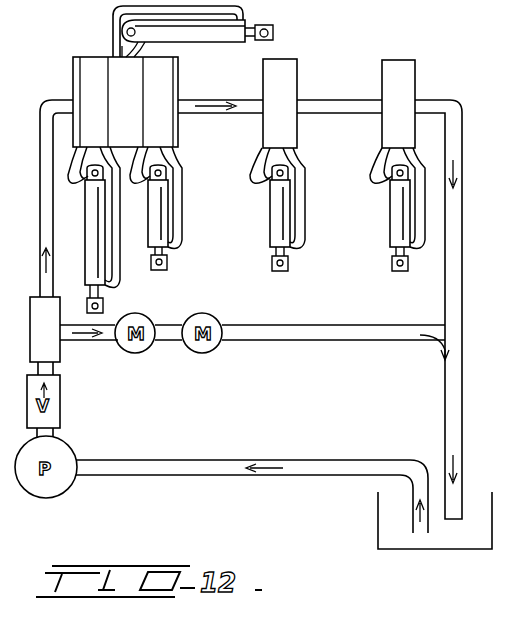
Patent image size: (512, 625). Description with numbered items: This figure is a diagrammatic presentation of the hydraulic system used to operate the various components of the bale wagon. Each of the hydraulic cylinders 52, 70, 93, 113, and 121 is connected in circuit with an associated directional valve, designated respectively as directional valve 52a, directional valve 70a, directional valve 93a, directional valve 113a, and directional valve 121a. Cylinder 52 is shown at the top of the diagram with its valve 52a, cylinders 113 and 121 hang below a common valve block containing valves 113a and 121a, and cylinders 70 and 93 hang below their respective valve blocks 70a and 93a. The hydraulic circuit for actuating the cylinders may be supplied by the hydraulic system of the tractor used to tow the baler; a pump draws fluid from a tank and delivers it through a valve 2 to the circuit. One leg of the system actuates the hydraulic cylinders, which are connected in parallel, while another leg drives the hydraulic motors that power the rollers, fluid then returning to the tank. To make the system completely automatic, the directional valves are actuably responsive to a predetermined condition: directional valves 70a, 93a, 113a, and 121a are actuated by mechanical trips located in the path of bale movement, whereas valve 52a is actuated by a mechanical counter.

The valve 2 is at (30, 336).
The hydraulic cylinder 52 is at (200, 32).
The directional valve 52a is at (122, 70).
The hydraulic cylinder 70 is at (280, 205).
The directional valve 70a is at (287, 90).
The hydraulic cylinder 93 is at (397, 220).
The directional valve 93a is at (405, 88).
The hydraulic cylinder 113 is at (97, 225).
The directional valve 113a is at (85, 85).
The hydraulic cylinder 121 is at (160, 210).
The directional valve 121a is at (166, 125).